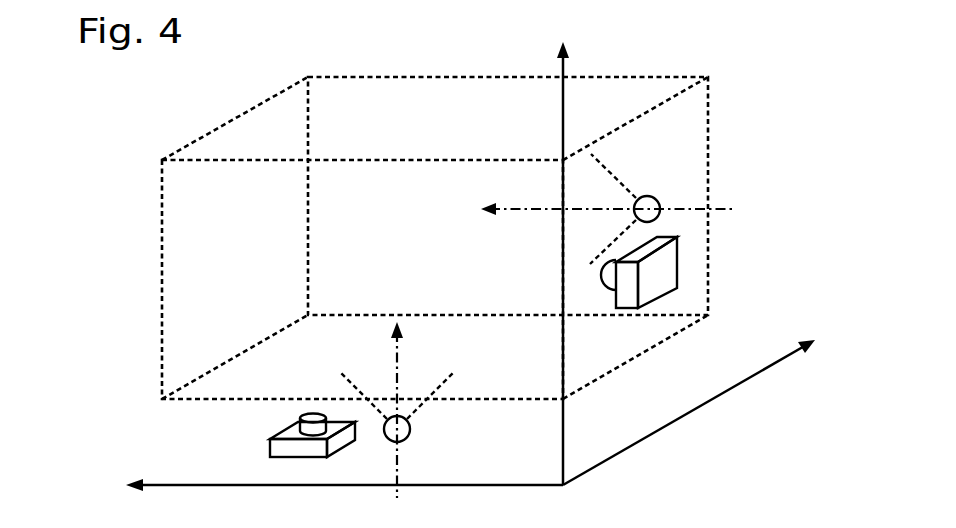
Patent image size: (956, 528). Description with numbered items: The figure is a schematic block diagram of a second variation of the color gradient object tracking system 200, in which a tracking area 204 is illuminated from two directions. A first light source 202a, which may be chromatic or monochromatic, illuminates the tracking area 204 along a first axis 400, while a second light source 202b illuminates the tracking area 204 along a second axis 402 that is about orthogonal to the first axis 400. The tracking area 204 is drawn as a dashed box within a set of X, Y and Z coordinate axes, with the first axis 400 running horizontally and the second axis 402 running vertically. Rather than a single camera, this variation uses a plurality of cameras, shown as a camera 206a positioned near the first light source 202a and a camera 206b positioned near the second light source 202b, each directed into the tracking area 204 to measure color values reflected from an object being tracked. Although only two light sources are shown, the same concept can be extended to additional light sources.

The system 200 is at (630, 34).
The tracking area 204 is at (535, 76).
The first light source 202a is at (653, 207).
The second light source 202b is at (407, 424).
The camera 206a is at (657, 266).
The camera 206b is at (270, 450).
The first axis 400 is at (547, 207).
The second axis 402 is at (400, 370).